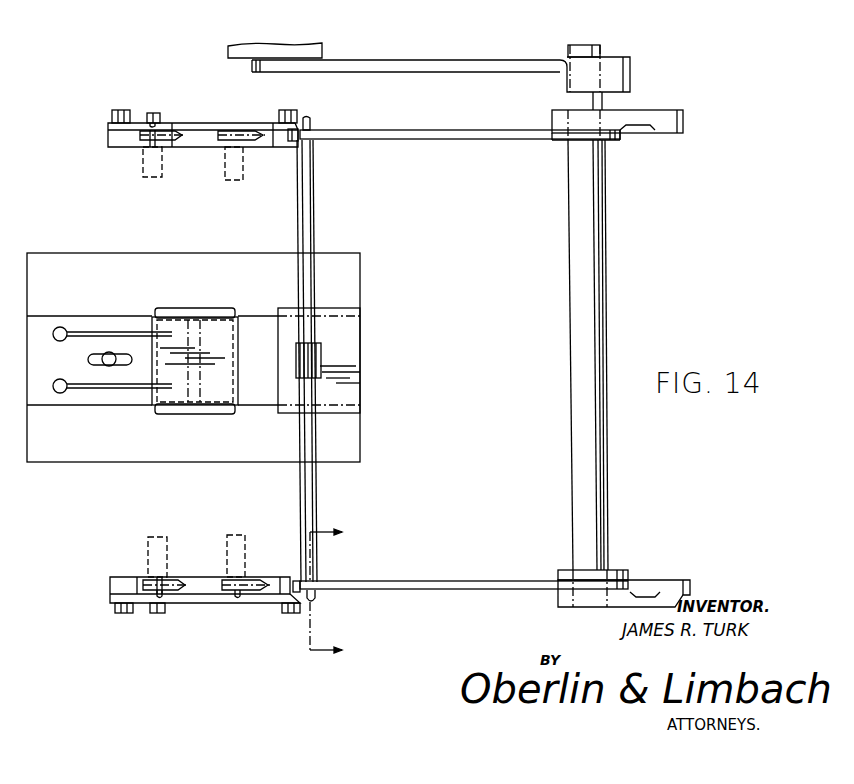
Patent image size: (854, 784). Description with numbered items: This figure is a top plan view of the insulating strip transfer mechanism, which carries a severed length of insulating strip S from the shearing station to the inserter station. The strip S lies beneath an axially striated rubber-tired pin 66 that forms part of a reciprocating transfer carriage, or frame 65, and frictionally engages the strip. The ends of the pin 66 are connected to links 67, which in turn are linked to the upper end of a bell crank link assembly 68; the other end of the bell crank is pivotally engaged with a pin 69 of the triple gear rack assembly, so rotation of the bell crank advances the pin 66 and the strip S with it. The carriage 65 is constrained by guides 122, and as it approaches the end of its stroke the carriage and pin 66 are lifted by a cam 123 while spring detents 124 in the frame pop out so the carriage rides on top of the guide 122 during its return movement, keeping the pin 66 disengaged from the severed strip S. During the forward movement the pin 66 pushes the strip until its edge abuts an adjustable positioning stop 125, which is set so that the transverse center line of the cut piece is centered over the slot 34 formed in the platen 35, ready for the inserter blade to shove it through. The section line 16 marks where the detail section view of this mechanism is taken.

The section line 16— 16 is at (340, 592).
The slot 34 is at (197, 312).
The platen 35 is at (101, 463).
The transfer carriage 65 is at (424, 610).
The rubber-tired pin 66 is at (316, 482).
The links 67 is at (420, 130).
The bell crank link assembly 68 is at (648, 110).
The pin 69 is at (258, 72).
The guides 122 is at (225, 130).
The cam 123 is at (176, 131).
The spring detents 124 is at (318, 598).
The adjustable positioning stop 125 is at (78, 317).
The insulating strip S is at (347, 336).